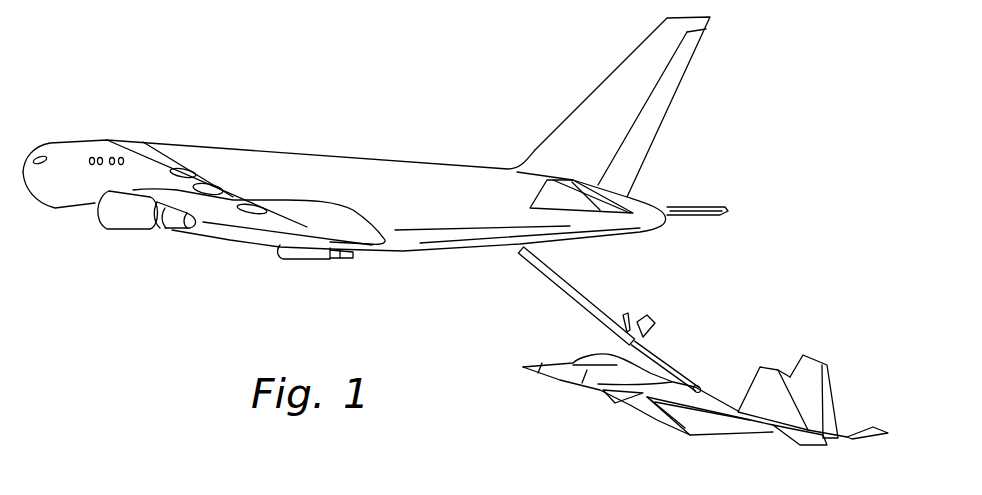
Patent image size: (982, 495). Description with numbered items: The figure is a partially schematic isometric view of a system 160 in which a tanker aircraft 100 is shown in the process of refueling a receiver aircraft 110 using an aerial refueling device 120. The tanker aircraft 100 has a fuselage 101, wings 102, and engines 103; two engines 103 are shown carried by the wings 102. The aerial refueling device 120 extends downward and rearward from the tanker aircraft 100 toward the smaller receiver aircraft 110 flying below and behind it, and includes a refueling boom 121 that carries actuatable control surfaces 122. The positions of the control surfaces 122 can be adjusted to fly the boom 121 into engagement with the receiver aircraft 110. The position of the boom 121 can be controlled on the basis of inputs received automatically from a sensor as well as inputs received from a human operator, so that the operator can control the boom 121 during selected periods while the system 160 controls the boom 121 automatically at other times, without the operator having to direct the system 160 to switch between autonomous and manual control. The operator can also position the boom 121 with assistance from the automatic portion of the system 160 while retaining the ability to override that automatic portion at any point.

The tanker aircraft 100 is at (158, 302).
The fuselage 101 is at (332, 168).
The wings 102 is at (157, 160).
The engines 103 is at (108, 208).
The receiver aircraft 110 is at (646, 411).
The aerial refueling device 120 is at (552, 302).
The refueling boom 121 is at (597, 302).
The control surfaces 122 is at (652, 330).
The system 160 is at (747, 100).